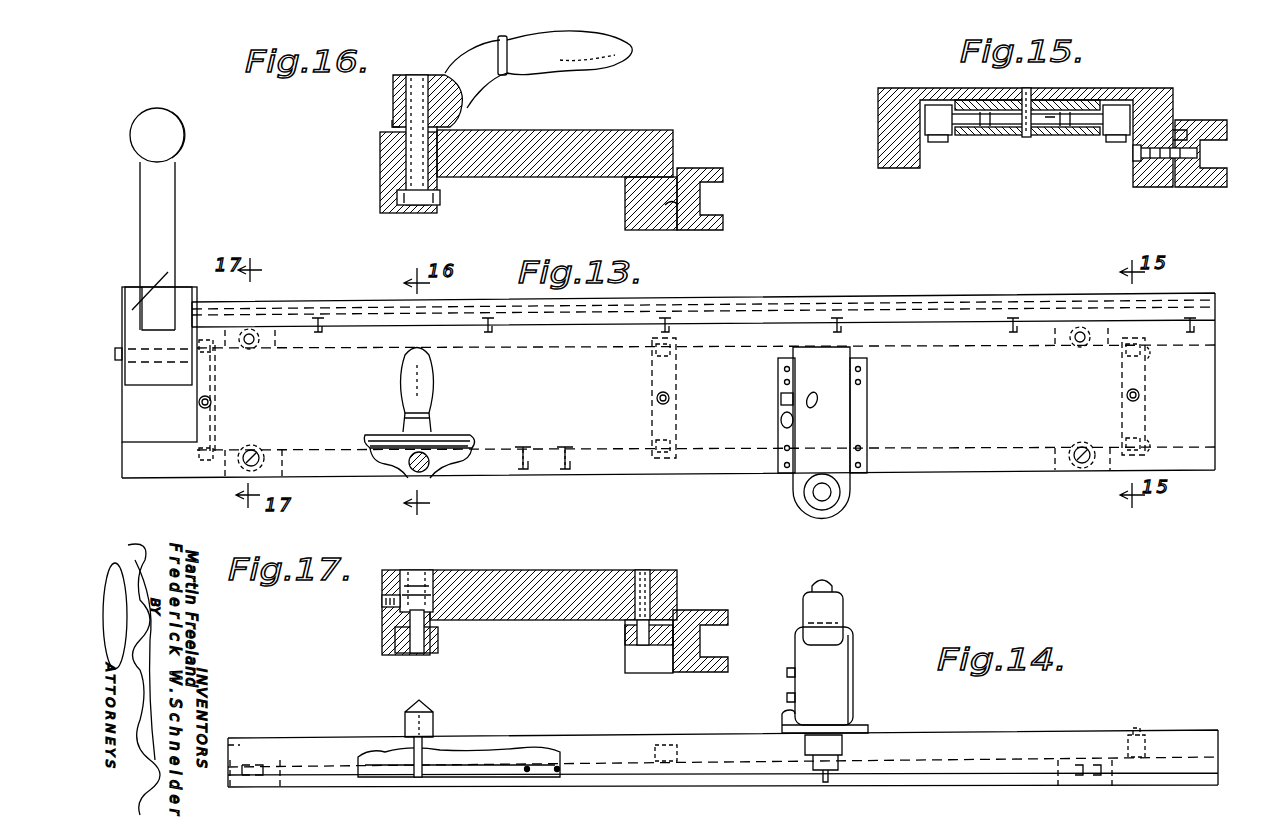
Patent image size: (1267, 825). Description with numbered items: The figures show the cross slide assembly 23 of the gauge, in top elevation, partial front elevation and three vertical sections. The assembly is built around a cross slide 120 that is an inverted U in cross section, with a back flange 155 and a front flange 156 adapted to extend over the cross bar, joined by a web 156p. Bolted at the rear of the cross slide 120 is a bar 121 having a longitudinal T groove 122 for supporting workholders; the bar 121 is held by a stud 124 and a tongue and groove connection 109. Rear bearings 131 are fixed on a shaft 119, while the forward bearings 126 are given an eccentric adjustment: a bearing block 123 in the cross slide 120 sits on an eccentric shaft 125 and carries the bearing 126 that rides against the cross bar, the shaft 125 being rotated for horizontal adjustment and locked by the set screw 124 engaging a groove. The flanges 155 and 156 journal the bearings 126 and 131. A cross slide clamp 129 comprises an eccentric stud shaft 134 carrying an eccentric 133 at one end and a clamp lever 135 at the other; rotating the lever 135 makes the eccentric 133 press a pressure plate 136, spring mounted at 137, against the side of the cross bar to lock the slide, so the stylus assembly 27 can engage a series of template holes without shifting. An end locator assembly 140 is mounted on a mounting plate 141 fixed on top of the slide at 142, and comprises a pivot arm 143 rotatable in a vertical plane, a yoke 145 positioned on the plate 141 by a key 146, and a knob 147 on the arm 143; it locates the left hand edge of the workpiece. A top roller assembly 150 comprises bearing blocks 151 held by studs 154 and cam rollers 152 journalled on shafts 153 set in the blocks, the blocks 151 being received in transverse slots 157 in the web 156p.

In FIG. 13, the cross slide assembly 23 is at (1230, 334).
In FIG. 13, the stylus assembly 27 is at (863, 474).
In FIG. 14, the stylus assembly 27 is at (866, 637).
In FIG. 16, the tongue and groove connection 109 is at (668, 222).
In FIG. 17, the tongue and groove connection 109 is at (686, 672).
In FIG. 16, the shaft 119 is at (673, 176).
In FIG. 13, the shaft 119 is at (252, 335).
In FIG. 17, the shaft 119 is at (643, 570).
In FIG. 16, the cross slide 120 is at (394, 74).
In FIG. 15, the cross slide 120 is at (1085, 89).
In FIG. 13, the cross slide 120 is at (668, 385).
In FIG. 17, the cross slide 120 is at (545, 573).
In FIG. 14, the cross slide 120 is at (1010, 730).
In FIG. 16, the bar 121 is at (383, 111).
In FIG. 15, the bar 121 is at (1203, 188).
In FIG. 13, the bar 121 is at (698, 310).
In FIG. 17, the bar 121 is at (700, 612).
In FIG. 16, the T groove 122 is at (723, 192).
In FIG. 15, the T groove 122 is at (1225, 170).
In FIG. 17, the T groove 122 is at (712, 635).
In FIG. 17, the bearing block 123 is at (408, 655).
In FIG. 15, the stud 124 is at (1205, 109).
In FIG. 13, the stud 124 is at (640, 318).
In FIG. 17, the stud 124 is at (384, 604).
In FIG. 13, the eccentric shaft 125 is at (255, 452).
In FIG. 17, the eccentric shaft 125 is at (420, 570).
In FIG. 13, the forward bearing 126 is at (262, 456).
In FIG. 17, the forward bearing 126 is at (400, 570).
In FIG. 15, the cross slide clamp 129 is at (1186, 160).
In FIG. 13, the cross slide clamp 129 is at (440, 408).
In FIG. 14, the cross slide clamp 129 is at (392, 724).
In FIG. 13, the rear bearing 131 is at (262, 350).
In FIG. 17, the rear bearing 131 is at (623, 637).
In FIG. 16, the eccentric 133 is at (413, 206).
In FIG. 13, the eccentric 133 is at (428, 468).
In FIG. 14, the eccentric 133 is at (418, 778).
In FIG. 16, the shaft 134 is at (416, 75).
In FIG. 13, the shaft 134 is at (400, 455).
In FIG. 16, the clamp lever 135 is at (626, 42).
In FIG. 13, the clamp lever 135 is at (407, 378).
In FIG. 14, the clamp lever 135 is at (432, 722).
In FIG. 16, the pressure plate 136 is at (440, 196).
In FIG. 13, the pressure plate 136 is at (430, 434).
In FIG. 14, the pressure plate 136 is at (496, 780).
In FIG. 13, the spring mounting 137 is at (540, 473).
In FIG. 13, the end locator assembly 140 is at (128, 260).
In FIG. 13, the mounting plate 141 is at (159, 382).
In FIG. 13, the fixing location 142 is at (146, 448).
In FIG. 13, the pivot arm 143 is at (178, 198).
In FIG. 13, the yoke 145 is at (170, 270).
In FIG. 13, the key 146 is at (118, 350).
In FIG. 13, the knob 147 is at (152, 124).
In FIG. 15, the top roller assembly 150 is at (983, 150).
In FIG. 13, the top roller assembly 150 is at (218, 430).
In FIG. 15, the bearing block 151 is at (1046, 136).
In FIG. 15, the cam roller 152 is at (938, 140).
In FIG. 15, the shaft 153 is at (1008, 135).
In FIG. 15, the stud 154 is at (1026, 88).
In FIG. 13, the stud 154 is at (212, 400).
In FIG. 15, the back flange 155 is at (1138, 165).
In FIG. 15, the front flange 156 is at (882, 126).
In FIG. 16, the web 156p is at (476, 131).
In FIG. 15, the web 156p is at (935, 90).
In FIG. 17, the web 156p is at (488, 580).
In FIG. 13, the slot 157 is at (205, 462).